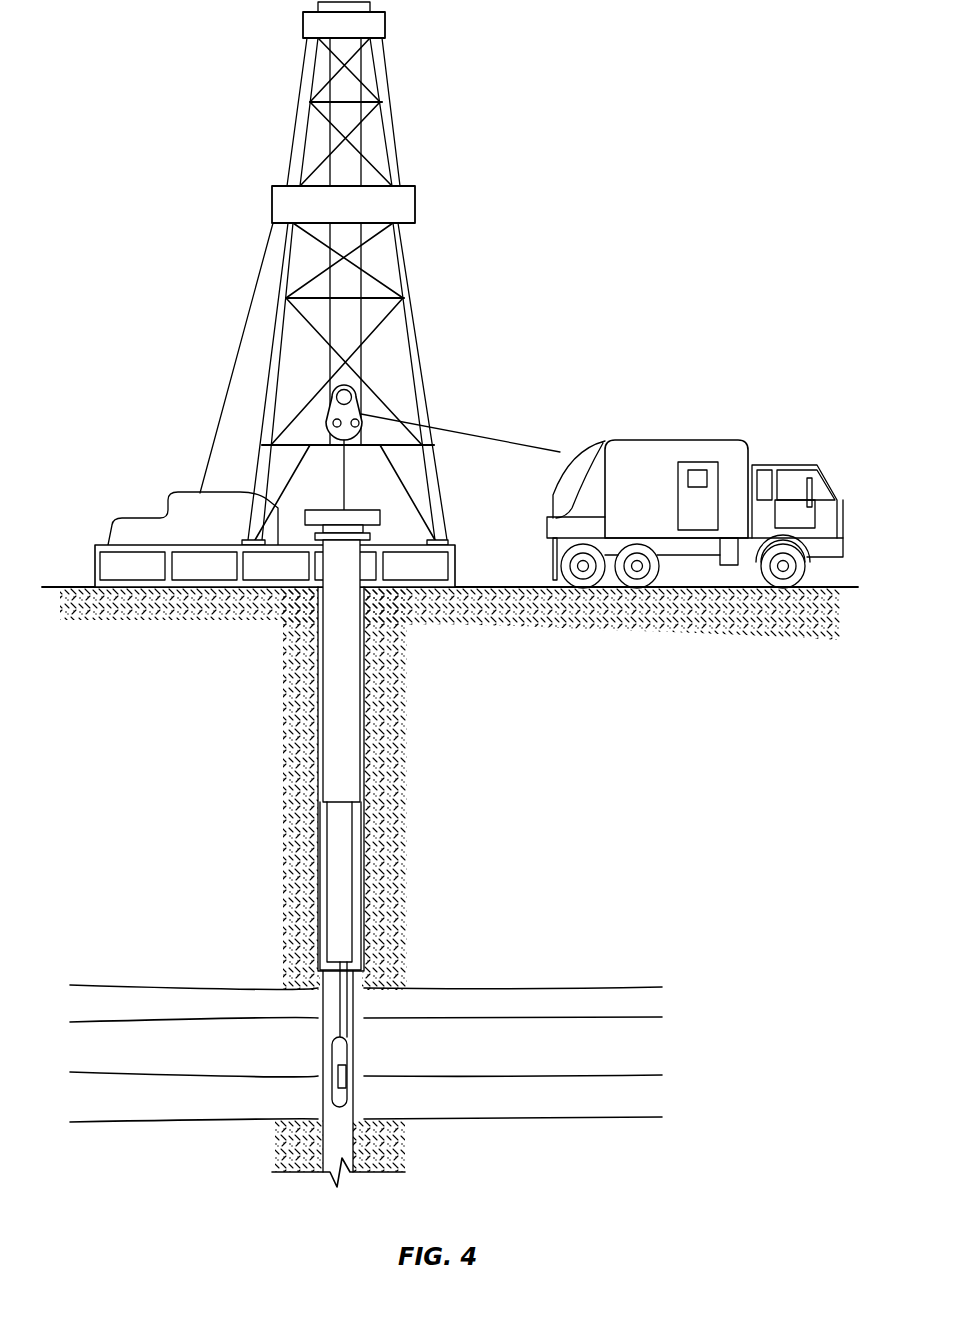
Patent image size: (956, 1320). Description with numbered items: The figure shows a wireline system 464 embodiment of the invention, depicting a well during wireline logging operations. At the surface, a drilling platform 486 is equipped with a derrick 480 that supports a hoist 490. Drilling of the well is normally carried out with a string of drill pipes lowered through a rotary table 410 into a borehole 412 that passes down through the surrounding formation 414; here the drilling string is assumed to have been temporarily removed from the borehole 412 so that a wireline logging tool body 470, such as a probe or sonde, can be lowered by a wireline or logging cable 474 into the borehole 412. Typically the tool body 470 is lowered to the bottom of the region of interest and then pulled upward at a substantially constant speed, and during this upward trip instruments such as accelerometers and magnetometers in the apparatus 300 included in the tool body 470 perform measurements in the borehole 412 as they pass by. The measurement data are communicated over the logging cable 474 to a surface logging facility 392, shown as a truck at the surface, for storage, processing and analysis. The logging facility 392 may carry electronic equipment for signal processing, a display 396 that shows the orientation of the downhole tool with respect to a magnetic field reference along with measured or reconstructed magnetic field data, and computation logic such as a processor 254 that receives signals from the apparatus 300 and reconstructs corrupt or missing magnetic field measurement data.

The wireline system 464 is at (450, 594).
The hoist 490 is at (359, 400).
The logging cable 474 is at (458, 428).
The rotary table 410 is at (380, 518).
The derrick 480 is at (440, 527).
The drilling platform 486 is at (458, 558).
The surface logging facility 392 is at (695, 499).
The display 396 is at (664, 470).
The processor 254 is at (678, 513).
The borehole 412 is at (320, 1013).
The tool body 470 is at (349, 1052).
The apparatus 300 is at (347, 1075).
The formation 414 is at (670, 977).